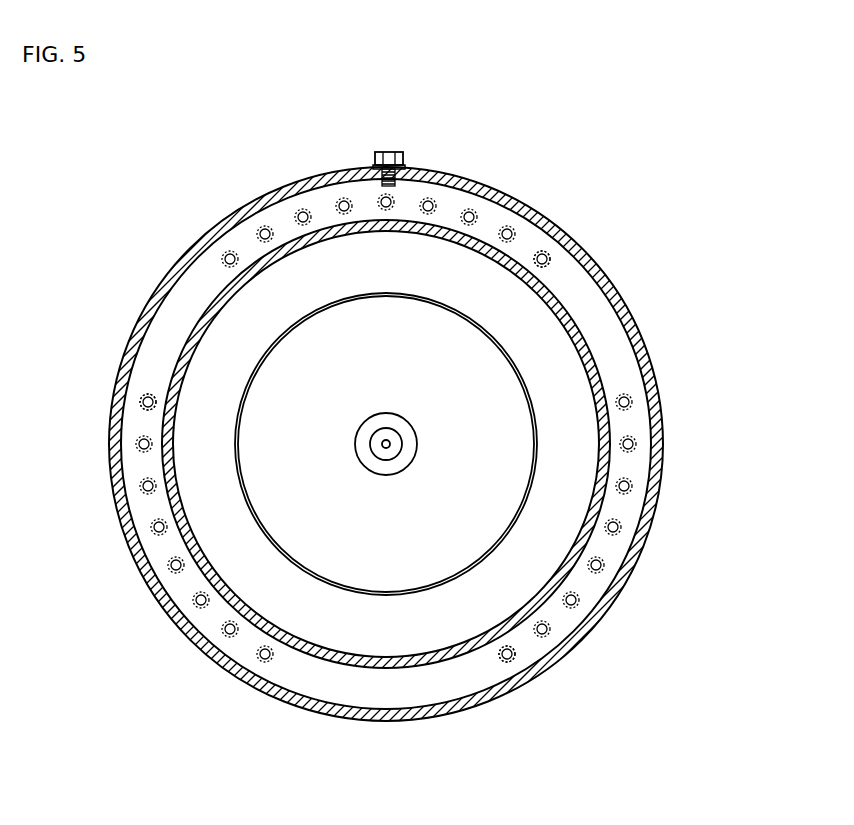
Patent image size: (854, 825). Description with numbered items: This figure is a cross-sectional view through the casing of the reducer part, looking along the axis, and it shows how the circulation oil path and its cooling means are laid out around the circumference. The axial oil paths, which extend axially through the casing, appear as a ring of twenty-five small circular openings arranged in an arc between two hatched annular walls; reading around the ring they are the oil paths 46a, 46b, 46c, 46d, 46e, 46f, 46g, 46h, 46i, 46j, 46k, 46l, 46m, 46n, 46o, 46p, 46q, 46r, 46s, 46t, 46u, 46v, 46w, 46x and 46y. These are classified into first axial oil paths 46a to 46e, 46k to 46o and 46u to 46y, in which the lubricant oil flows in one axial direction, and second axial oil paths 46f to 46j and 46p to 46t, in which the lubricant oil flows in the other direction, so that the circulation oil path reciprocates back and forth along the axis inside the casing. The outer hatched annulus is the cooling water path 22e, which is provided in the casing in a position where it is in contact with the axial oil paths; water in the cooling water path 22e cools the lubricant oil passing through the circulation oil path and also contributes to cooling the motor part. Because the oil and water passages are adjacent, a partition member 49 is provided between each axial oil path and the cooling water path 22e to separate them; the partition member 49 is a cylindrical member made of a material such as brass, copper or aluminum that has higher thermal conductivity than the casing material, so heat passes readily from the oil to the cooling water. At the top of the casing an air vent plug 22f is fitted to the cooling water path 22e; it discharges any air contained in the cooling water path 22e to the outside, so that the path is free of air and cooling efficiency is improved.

The cooling water path 22e is at (597, 325).
The air vent plug 22f is at (388, 151).
The partition member 49 is at (147, 394).
The first axial oil path 46a is at (431, 198).
The first axial oil path 46b is at (472, 209).
The first axial oil path 46c is at (511, 228).
The first axial oil path 46d is at (547, 252).
The first axial oil path 46e is at (632, 401).
The second axial oil path 46f is at (636, 444).
The second axial oil path 46g is at (632, 488).
The second axial oil path 46h is at (621, 530).
The second axial oil path 46i is at (602, 569).
The second axial oil path 46j is at (578, 605).
The first axial oil path 46k is at (547, 636).
The first axial oil path 46l is at (511, 661).
The first axial oil path 46m is at (260, 660).
The first axial oil path 46n is at (225, 635).
The first axial oil path 46o is at (194, 605).
The second axial oil path 46p is at (169, 569).
The second axial oil path 46q is at (151, 529).
The second axial oil path 46r is at (140, 487).
The second axial oil path 46s is at (136, 444).
The second axial oil path 46t is at (140, 400).
The first axial oil path 46u is at (226, 252).
The first axial oil path 46v is at (261, 227).
The first axial oil path 46w is at (301, 209).
The first axial oil path 46x is at (343, 198).
The first axial oil path 46y is at (389, 194).